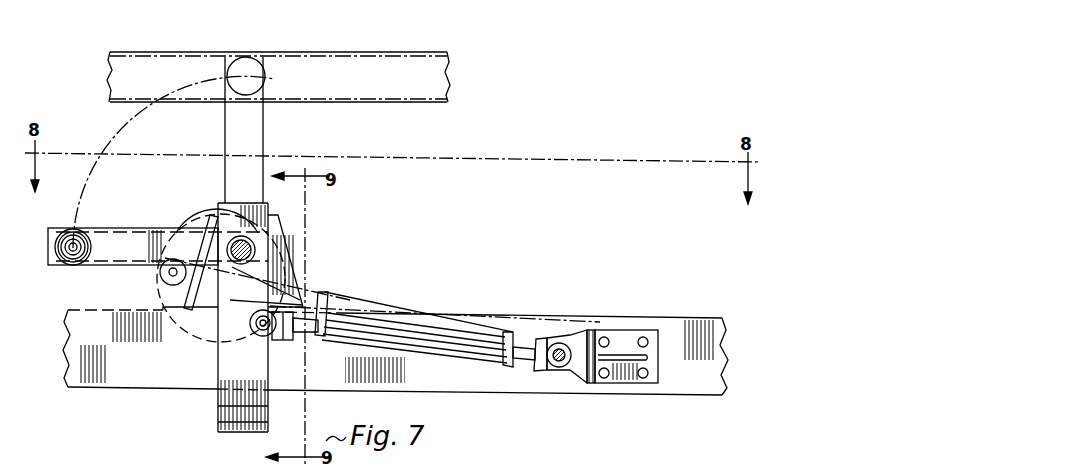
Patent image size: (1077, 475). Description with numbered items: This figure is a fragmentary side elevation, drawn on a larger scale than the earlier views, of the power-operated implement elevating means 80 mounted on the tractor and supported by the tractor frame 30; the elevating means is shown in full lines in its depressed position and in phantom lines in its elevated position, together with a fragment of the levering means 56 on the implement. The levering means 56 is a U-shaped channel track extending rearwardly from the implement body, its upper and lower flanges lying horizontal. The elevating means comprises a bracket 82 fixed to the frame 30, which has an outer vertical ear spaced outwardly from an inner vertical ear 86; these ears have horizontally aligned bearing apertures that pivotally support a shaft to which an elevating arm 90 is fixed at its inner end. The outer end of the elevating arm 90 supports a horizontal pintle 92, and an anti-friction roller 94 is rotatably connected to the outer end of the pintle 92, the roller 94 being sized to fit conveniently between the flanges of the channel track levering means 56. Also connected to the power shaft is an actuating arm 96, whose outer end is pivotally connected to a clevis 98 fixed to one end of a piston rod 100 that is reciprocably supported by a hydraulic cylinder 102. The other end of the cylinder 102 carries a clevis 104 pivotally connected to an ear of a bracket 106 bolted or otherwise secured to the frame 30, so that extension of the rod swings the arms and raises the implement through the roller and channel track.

The frame 30 is at (670, 320).
The levering means 56 is at (407, 52).
The implement elevating means 80 is at (155, 228).
The bracket 82 is at (288, 265).
The inner vertical ear 86 is at (215, 373).
The elevating arm 90 is at (264, 141).
The horizontal pintle 92 is at (70, 232).
The anti-friction roller 94 is at (268, 90).
The actuating arm 96 is at (213, 273).
The clevis 98 is at (184, 287).
The piston rod 100 is at (300, 336).
The hydraulic cylinder 102 is at (461, 348).
The clevis 104 is at (543, 372).
The bracket 106 is at (625, 383).